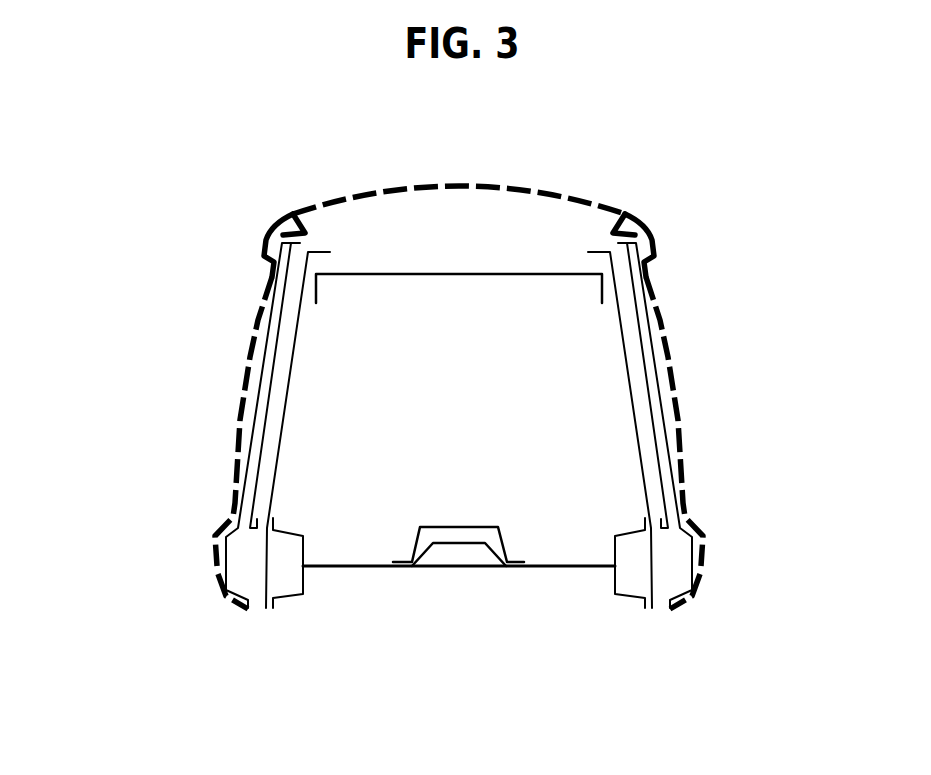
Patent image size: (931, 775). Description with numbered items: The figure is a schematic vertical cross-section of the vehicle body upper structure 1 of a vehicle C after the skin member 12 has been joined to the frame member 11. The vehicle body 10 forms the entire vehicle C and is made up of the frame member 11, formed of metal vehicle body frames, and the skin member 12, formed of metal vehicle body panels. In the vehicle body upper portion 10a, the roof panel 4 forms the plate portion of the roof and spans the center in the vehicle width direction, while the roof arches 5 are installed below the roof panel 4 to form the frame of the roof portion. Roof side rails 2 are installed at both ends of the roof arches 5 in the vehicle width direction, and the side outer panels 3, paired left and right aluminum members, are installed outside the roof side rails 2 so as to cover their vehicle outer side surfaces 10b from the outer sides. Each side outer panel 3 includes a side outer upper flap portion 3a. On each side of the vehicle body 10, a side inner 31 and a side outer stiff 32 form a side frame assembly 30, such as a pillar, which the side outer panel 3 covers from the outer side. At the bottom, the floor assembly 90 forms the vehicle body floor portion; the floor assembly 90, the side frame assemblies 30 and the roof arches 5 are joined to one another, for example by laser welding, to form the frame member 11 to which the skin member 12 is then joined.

The vehicle body upper structure 1 is at (750, 175).
The vehicle C is at (142, 205).
The roof side rail 2 is at (287, 238).
The side outer panel 3 is at (237, 375).
The side outer upper flap portion 3a is at (240, 418).
The roof panel 4 is at (477, 182).
The roof arch 5 is at (455, 275).
The vehicle body 10 is at (237, 230).
The vehicle body upper portion 10a is at (403, 263).
The vehicle outer side surface 10b is at (235, 477).
The frame member 11 is at (650, 332).
The skin member 12 is at (662, 285).
The side frame assembly 30 is at (376, 353).
The side inner 31 is at (290, 385).
The side outer stiff 32 is at (257, 440).
The floor assembly 90 is at (368, 582).